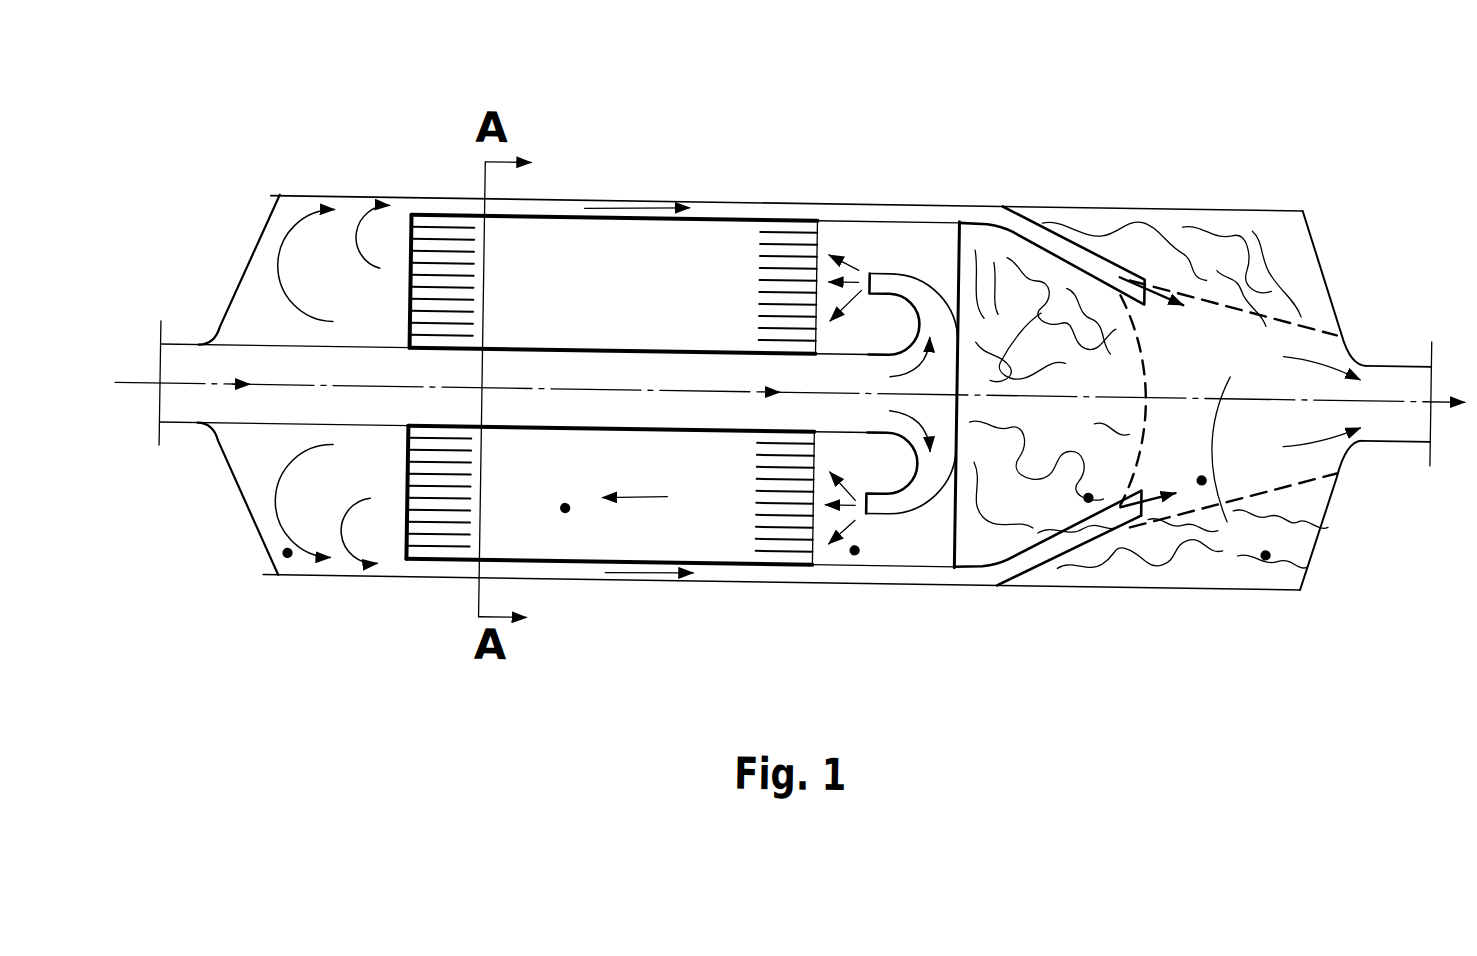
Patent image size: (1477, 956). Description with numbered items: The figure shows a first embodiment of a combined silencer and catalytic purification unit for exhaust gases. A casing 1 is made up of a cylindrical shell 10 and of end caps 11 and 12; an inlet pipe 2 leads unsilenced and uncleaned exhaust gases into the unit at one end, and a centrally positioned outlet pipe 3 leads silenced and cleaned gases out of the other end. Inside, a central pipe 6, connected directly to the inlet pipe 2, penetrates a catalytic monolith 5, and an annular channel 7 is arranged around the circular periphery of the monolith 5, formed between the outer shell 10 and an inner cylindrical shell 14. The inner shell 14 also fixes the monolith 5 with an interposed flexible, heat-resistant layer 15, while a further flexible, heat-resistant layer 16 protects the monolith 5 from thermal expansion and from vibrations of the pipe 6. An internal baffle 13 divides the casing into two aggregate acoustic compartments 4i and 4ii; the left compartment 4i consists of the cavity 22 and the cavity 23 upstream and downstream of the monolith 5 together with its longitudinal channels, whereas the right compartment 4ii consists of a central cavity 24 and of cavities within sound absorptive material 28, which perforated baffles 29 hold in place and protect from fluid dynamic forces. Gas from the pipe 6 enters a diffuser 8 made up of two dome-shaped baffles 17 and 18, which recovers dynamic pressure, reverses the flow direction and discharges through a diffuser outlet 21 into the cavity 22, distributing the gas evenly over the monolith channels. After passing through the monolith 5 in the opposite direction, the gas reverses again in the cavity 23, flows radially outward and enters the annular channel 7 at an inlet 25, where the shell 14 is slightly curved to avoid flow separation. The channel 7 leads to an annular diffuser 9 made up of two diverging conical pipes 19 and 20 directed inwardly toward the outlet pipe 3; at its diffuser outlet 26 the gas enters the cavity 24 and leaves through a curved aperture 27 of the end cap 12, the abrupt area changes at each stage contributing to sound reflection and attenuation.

The casing 1 is at (274, 193).
The inlet pipe 2 is at (176, 342).
The outlet pipe 3 is at (1400, 345).
The left acoustic compartment 4i is at (857, 540).
The right acoustic compartment 4ii is at (1090, 484).
The monolith 5 is at (605, 380).
The central pipe 6 is at (633, 365).
The annular channel 7 is at (549, 201).
The diffuser 8 is at (930, 294).
The annular diffuser 9 is at (1066, 237).
The cylindrical shell 10 is at (335, 192).
The end cap 11 is at (247, 497).
The end cap 12 is at (1324, 273).
The internal baffle 13 is at (962, 523).
The inner shell 14 is at (838, 210).
The flexible heat-resistant layer 15 is at (738, 208).
The flexible heat-resistant layer 16 is at (716, 340).
The dome-shaped baffle 17 is at (880, 504).
The dome-shaped baffle 18 is at (909, 504).
The conical pipe 19 is at (1040, 559).
The conical pipe 20 is at (1085, 506).
The diffuser outlet 21 is at (870, 244).
The cavity 22 is at (903, 247).
The cavity 23 is at (331, 384).
The central cavity 24 is at (1308, 443).
The inlet 25 is at (409, 203).
The diffuser outlet 26 is at (1143, 260).
The aperture 27 is at (1358, 431).
The sound absorptive material 28 is at (1110, 336).
The perforated baffles 29 is at (1282, 301).